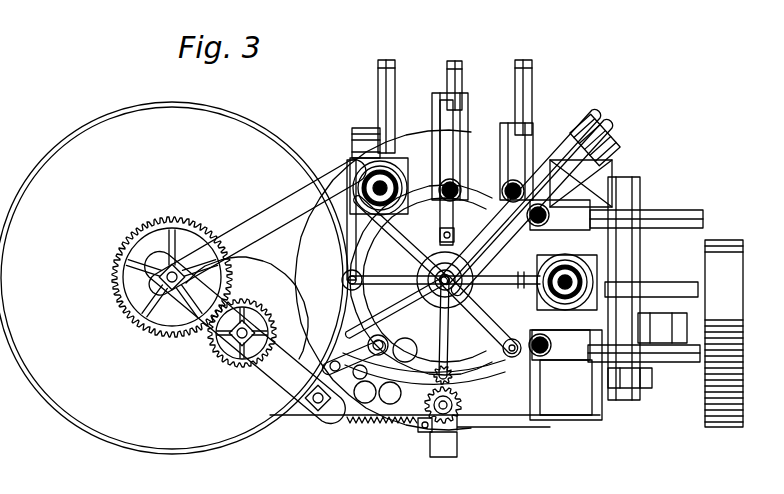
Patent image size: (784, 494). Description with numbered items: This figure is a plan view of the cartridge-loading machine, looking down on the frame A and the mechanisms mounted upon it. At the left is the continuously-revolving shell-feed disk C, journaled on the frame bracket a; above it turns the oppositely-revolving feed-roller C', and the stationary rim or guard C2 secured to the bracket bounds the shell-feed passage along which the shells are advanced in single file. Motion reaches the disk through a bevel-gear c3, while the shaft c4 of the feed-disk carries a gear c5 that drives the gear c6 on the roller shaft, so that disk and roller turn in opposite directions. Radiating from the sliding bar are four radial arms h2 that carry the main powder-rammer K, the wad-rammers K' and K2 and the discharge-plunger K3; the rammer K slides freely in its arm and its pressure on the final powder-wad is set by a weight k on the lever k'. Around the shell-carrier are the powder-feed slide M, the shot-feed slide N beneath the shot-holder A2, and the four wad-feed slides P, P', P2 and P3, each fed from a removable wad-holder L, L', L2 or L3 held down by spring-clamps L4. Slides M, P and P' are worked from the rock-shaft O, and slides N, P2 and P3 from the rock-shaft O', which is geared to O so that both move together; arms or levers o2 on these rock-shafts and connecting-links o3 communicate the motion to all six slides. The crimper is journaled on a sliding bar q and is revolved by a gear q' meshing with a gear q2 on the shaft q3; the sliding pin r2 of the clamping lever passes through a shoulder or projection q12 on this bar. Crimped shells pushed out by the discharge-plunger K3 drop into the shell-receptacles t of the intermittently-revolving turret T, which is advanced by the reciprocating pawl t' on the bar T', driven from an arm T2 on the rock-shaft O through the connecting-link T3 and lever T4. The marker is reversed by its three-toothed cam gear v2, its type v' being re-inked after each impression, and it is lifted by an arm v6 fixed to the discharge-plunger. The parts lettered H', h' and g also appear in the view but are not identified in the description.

The shell-feed disk C is at (174, 278).
The feed-roller C' is at (247, 322).
The stationary rim or guard C2 is at (282, 425).
The bevel-gear c3 is at (160, 283).
The shaft of the feed-disk c4 is at (128, 318).
The gear c5 is at (262, 298).
The gear c6 is at (202, 355).
The frame bracket a is at (245, 338).
The three-toothed cam gear v2 is at (300, 398).
The arm v6 is at (376, 340).
The type v' is at (353, 357).
The lever arm H' is at (257, 206).
The powder-feed slide M is at (379, 171).
The arms or levers o2 is at (395, 100).
The connecting-links o3 is at (378, 92).
The rock-shaft O is at (594, 84).
The rock-shaft O' is at (732, 223).
The wad-feed slide P is at (450, 147).
The wad-feed slide P' is at (524, 150).
The wad-feed slide P2 is at (550, 216).
The wad-feed slide P3 is at (552, 347).
The wad-holder L is at (468, 159).
The wad-holder L' is at (520, 185).
The wad-holder L2 is at (642, 186).
The wad-holder L3 is at (542, 398).
The spring-clamps L4 is at (470, 160).
The weight k is at (603, 139).
The lever k' is at (625, 163).
The main powder-rammer K is at (581, 183).
The wad-rammer K' is at (386, 220).
The wad-rammer K2 is at (516, 360).
The discharge-plunger K3 is at (340, 418).
The shot-feed slide N is at (612, 265).
The frame A is at (578, 405).
The shot-holder A2 is at (595, 282).
The block g is at (665, 345).
The turret T is at (435, 431).
The reciprocating bar T' is at (511, 423).
The arm T2 is at (640, 392).
The connecting-link T3 is at (628, 400).
The lever T4 is at (554, 397).
The shell-receptacles t is at (353, 434).
The reciprocating pawl t' is at (388, 433).
The sliding pin r2 is at (432, 430).
The spoke h' is at (401, 240).
The radial arms h2 is at (410, 268).
The sliding bar q is at (443, 433).
The gear q' is at (436, 330).
The gear q2 is at (452, 450).
The shaft q3 is at (420, 432).
The shoulder or projection q12 is at (432, 438).